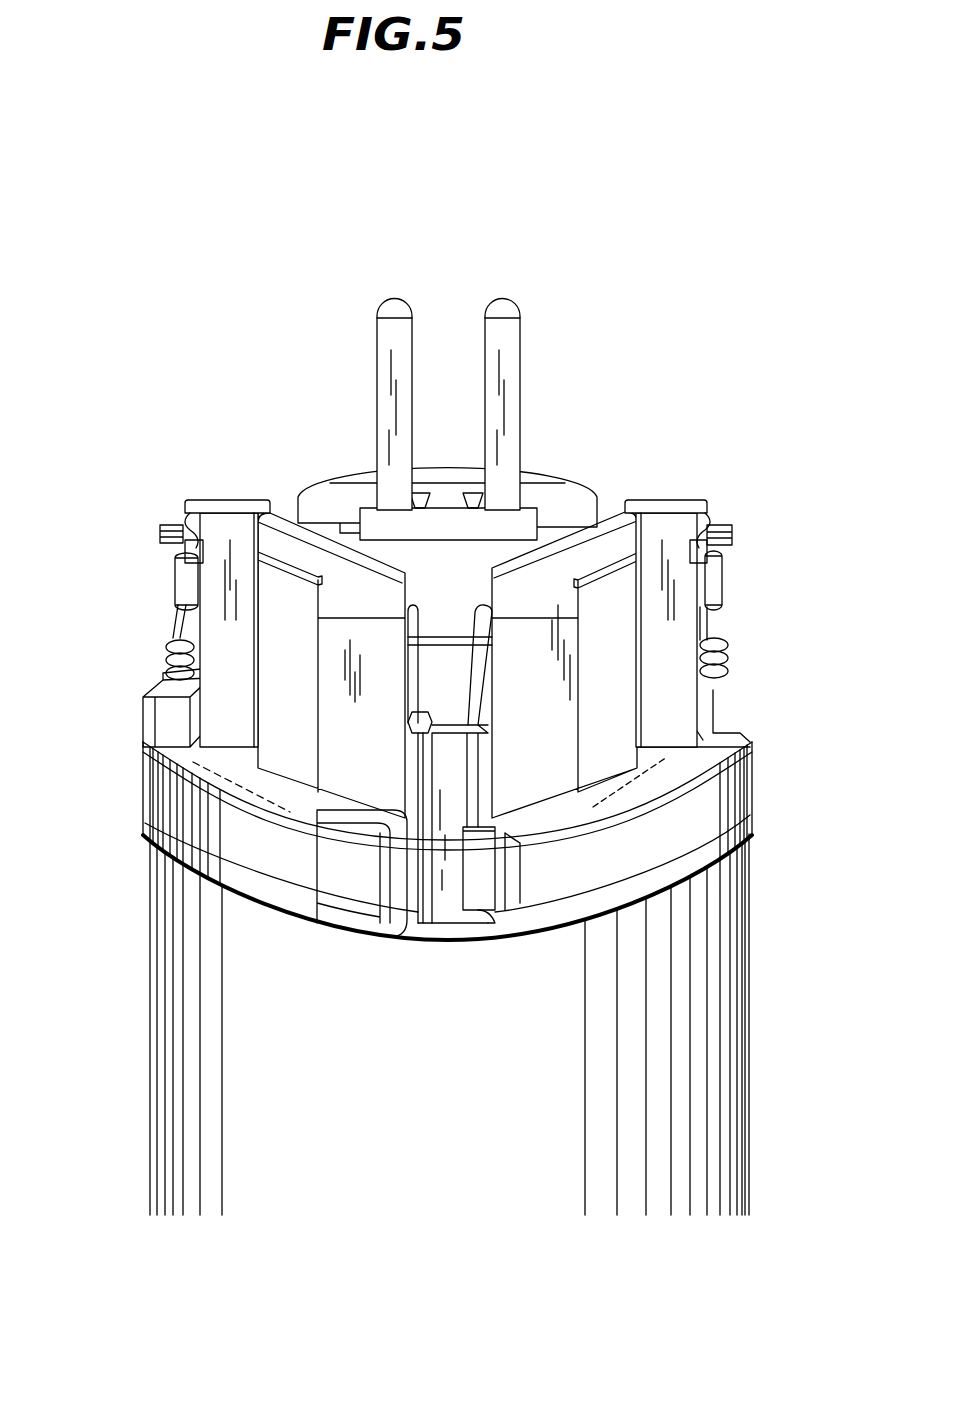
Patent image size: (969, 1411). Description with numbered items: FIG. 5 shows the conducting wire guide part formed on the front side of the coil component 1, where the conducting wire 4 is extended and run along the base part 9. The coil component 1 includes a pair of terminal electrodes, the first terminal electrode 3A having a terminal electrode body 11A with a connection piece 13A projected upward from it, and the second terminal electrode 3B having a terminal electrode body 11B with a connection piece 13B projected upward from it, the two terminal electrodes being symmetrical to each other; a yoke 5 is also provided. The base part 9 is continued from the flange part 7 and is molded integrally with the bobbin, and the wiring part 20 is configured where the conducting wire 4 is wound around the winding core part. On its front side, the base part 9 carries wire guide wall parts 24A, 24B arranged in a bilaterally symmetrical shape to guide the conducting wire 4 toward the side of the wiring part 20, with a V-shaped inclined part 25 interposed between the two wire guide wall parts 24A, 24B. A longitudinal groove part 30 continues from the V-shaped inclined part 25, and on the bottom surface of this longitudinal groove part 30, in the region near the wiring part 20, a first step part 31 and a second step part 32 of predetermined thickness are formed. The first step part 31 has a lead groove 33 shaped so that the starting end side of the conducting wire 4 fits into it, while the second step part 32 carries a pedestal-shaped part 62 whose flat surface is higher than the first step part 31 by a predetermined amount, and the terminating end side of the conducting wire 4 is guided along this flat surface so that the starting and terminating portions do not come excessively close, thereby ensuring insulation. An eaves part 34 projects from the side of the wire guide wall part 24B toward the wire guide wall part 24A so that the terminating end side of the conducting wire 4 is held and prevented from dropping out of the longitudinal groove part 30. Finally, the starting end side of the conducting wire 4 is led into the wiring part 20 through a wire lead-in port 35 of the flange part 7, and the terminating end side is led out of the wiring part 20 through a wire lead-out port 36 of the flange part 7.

The coil component 1 is at (165, 310).
The first terminal electrode 3A is at (222, 497).
The second terminal electrode 3B is at (672, 493).
The conducting wire 4 is at (415, 730).
The yoke 5 is at (713, 833).
The flange part 7 is at (263, 903).
The base part 9 is at (637, 700).
The terminal electrode body 11A is at (173, 560).
The terminal electrode body 11B is at (724, 562).
The connection piece 13A is at (392, 388).
The connection piece 13B is at (500, 385).
The wiring part 20 is at (707, 1097).
The wire guide wall part 24A is at (350, 597).
The wire guide wall part 24B is at (540, 600).
The V-shaped inclined part 25 is at (500, 550).
The longitudinal groove part 30 is at (448, 668).
The first step part 31 is at (438, 740).
The second step part 32 is at (422, 777).
The lead groove 33 is at (416, 910).
The eaves part 34 is at (495, 927).
The wire lead-in port 35 is at (417, 905).
The wire lead-out port 36 is at (493, 940).
The pedestal-shaped part 62 is at (448, 780).